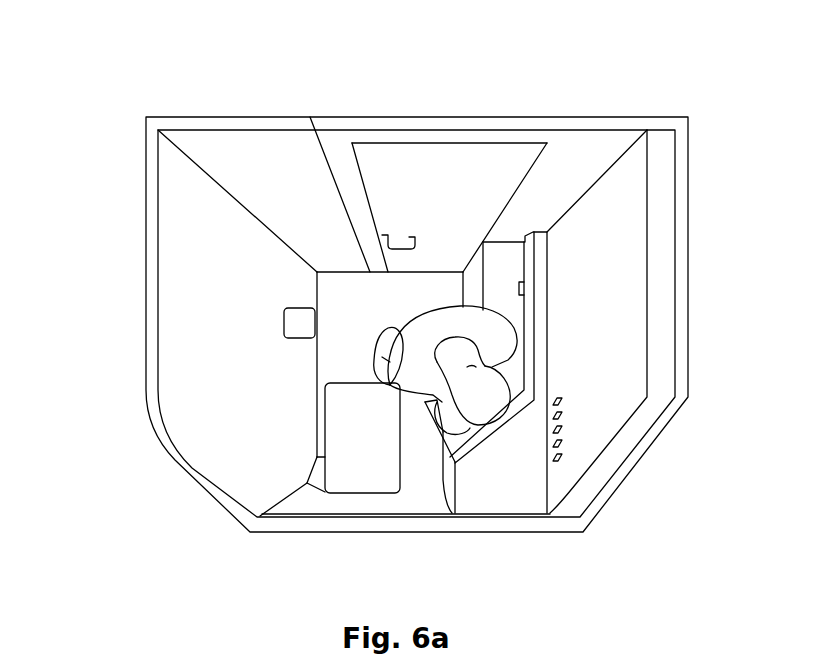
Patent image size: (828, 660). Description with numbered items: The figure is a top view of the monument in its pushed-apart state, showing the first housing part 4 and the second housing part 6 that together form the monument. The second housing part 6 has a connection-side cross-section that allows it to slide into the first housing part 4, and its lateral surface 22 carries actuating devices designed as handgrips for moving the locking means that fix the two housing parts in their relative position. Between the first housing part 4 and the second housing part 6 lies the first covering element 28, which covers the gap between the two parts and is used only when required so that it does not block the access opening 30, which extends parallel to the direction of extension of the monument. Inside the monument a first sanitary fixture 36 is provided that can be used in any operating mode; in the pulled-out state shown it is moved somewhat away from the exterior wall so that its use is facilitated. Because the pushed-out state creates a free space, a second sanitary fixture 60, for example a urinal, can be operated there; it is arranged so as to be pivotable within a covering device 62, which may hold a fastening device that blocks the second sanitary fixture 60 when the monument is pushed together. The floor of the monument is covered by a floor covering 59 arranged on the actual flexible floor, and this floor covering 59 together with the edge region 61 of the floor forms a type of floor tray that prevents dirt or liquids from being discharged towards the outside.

The first housing part 4 is at (618, 106).
The second housing part 6 is at (237, 102).
The lateral surface 22 is at (148, 347).
The first covering element 28 is at (208, 148).
The access opening 30 is at (467, 106).
The first sanitary fixture 36 is at (353, 473).
The floor covering 59 is at (323, 370).
The second sanitary fixture 60 is at (480, 453).
The edge region 61 is at (315, 288).
The covering device 62 is at (463, 482).